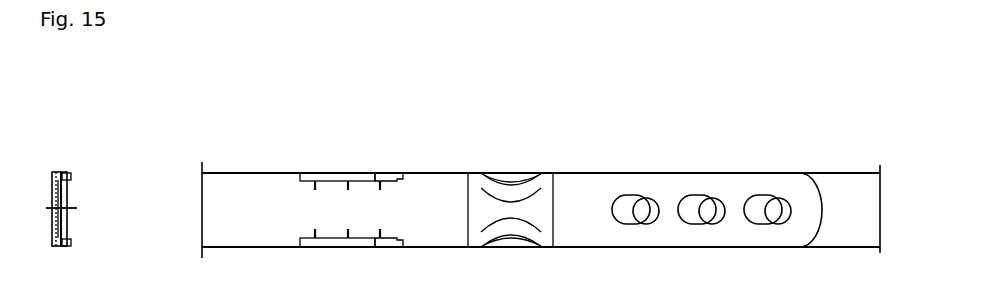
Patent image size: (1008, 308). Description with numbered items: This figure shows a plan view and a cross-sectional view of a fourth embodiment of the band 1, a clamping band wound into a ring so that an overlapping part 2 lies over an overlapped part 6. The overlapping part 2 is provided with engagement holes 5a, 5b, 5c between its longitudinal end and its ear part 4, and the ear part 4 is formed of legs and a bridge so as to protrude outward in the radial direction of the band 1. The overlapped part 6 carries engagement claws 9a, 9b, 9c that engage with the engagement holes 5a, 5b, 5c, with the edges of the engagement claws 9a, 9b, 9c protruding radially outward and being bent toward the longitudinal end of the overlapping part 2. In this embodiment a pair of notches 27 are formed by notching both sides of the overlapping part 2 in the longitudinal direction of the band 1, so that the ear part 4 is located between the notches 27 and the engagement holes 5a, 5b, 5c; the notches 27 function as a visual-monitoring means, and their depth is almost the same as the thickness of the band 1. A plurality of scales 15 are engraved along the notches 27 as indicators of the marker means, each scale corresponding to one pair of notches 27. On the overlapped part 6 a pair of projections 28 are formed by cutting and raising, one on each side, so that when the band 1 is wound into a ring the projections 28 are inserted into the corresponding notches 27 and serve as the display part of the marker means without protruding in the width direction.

The band 1 is at (463, 168).
The overlapping part 2 is at (418, 183).
The ear part 4 is at (510, 165).
The overlapped part 6 is at (62, 228).
The scales 15 is at (307, 185).
The notches 27 is at (332, 177).
The projections 28 is at (385, 175).
The engagement claw 9a is at (632, 205).
The engagement claw 9b is at (693, 205).
The engagement claw 9c is at (760, 205).
The engagement hole 5a is at (645, 227).
The engagement hole 5b is at (708, 227).
The engagement hole 5c is at (775, 227).